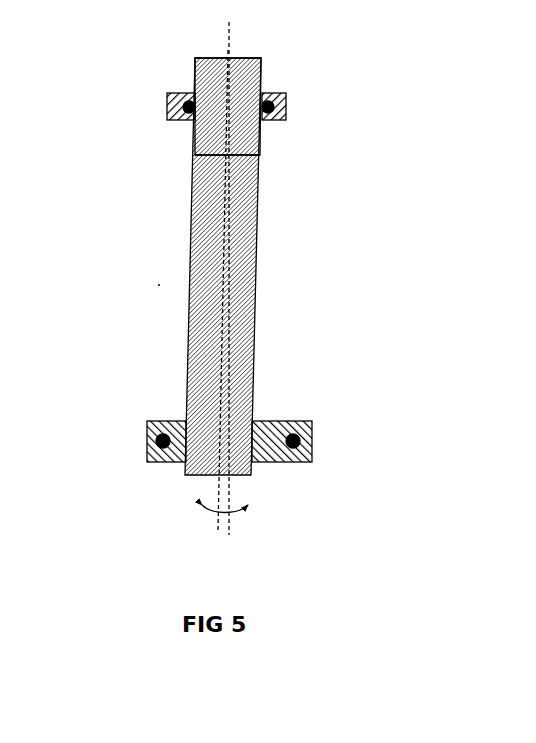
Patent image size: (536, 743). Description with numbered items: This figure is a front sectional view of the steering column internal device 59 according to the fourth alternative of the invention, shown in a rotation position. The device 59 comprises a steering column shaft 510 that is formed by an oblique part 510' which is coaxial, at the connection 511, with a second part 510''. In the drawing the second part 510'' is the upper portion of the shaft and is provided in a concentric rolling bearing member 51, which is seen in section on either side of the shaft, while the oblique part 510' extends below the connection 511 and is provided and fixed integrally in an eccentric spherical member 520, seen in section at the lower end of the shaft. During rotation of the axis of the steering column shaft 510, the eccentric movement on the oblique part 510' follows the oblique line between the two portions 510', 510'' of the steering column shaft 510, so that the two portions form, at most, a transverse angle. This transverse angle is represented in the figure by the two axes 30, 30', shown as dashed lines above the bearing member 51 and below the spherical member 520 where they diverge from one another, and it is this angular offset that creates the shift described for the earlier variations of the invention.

The axis 30 is at (185, 21).
The axis 30' is at (278, 21).
The concentric rolling bearing member 51 is at (289, 107).
The steering column internal device 59 is at (158, 285).
The steering column shaft 510 is at (272, 266).
The oblique part 510' is at (276, 305).
The second part 510'' is at (280, 174).
The connection 511 is at (190, 157).
The eccentric spherical member 520 is at (319, 442).